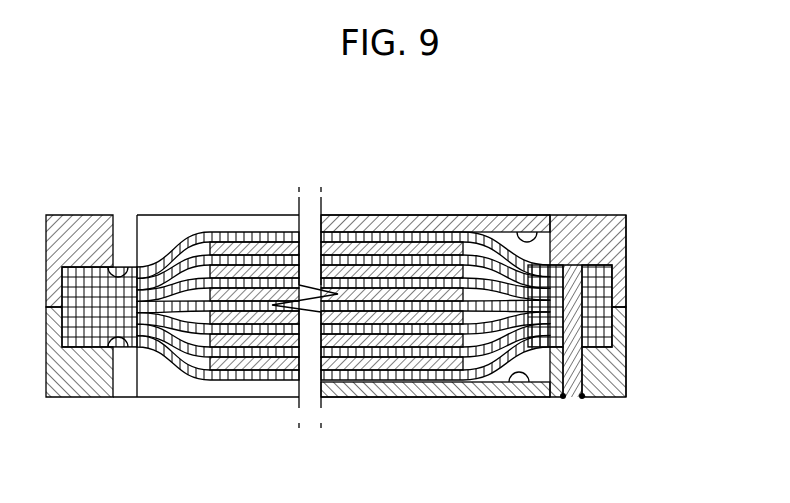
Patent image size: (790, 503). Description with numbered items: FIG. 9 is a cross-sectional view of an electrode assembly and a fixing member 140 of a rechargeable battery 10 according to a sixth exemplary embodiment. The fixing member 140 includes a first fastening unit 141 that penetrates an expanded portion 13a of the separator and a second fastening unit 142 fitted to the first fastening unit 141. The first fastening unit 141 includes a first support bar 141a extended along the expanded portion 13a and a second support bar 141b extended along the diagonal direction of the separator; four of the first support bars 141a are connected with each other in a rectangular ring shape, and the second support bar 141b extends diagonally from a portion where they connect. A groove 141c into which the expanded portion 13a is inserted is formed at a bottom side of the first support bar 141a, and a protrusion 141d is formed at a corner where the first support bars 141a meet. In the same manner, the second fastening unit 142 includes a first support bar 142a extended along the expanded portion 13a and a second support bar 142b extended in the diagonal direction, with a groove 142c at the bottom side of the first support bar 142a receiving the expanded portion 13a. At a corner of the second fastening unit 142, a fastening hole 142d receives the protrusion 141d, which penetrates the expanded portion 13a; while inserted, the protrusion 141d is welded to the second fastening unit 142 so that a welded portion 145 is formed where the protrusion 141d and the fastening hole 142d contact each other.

The rechargeable battery 10 is at (366, 226).
The expanded portion 13a is at (90, 347).
The fixing member 140 is at (695, 260).
The first fastening unit 141 is at (634, 258).
The first support bar 141a is at (78, 222).
The second support bar 141b is at (453, 222).
The groove 141c is at (133, 266).
The protrusion 141d is at (627, 230).
The second fastening unit 142 is at (634, 380).
The first support bar 142a is at (58, 387).
The second support bar 142b is at (442, 392).
The groove 142c is at (133, 342).
The fastening hole 142d is at (583, 398).
The welded portion 145 is at (563, 398).